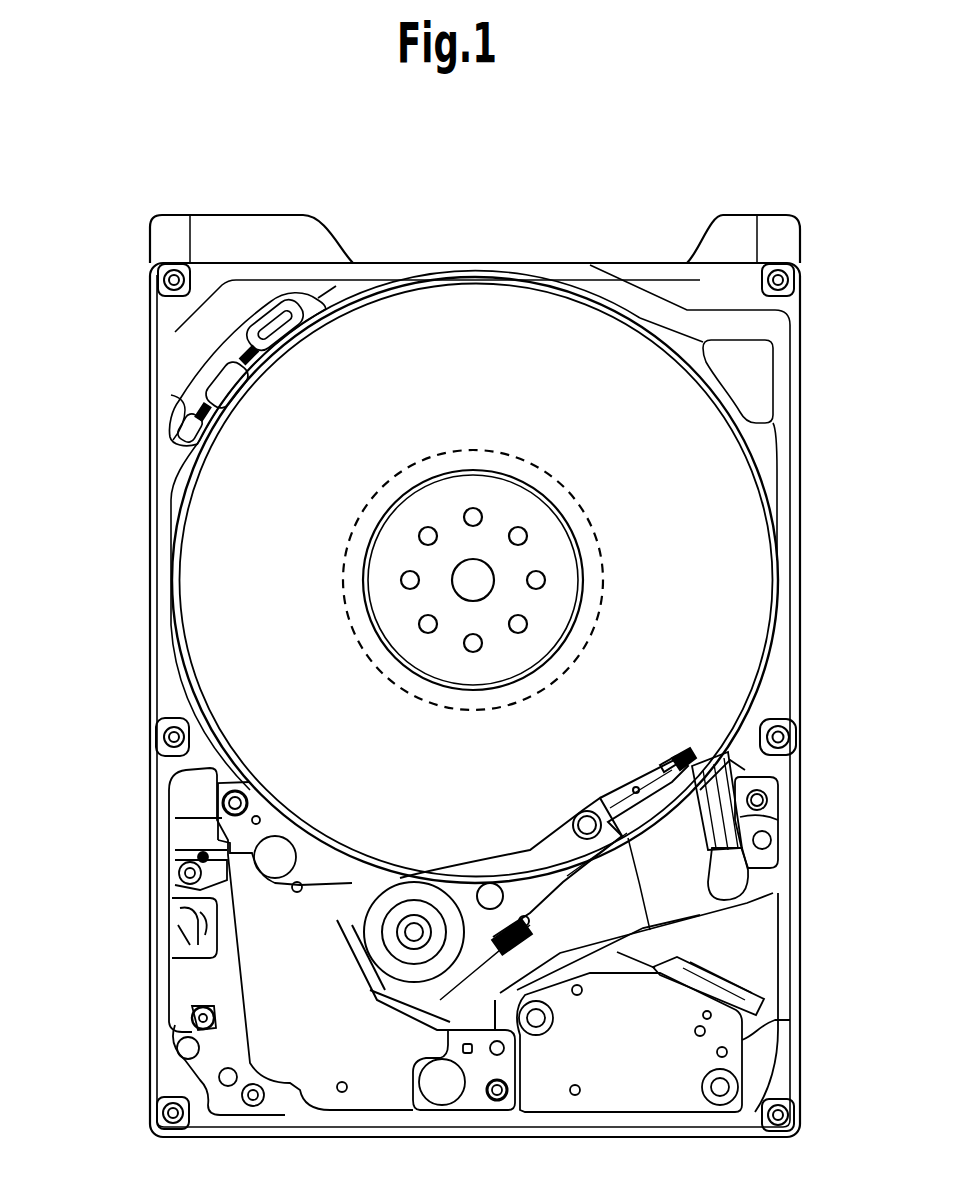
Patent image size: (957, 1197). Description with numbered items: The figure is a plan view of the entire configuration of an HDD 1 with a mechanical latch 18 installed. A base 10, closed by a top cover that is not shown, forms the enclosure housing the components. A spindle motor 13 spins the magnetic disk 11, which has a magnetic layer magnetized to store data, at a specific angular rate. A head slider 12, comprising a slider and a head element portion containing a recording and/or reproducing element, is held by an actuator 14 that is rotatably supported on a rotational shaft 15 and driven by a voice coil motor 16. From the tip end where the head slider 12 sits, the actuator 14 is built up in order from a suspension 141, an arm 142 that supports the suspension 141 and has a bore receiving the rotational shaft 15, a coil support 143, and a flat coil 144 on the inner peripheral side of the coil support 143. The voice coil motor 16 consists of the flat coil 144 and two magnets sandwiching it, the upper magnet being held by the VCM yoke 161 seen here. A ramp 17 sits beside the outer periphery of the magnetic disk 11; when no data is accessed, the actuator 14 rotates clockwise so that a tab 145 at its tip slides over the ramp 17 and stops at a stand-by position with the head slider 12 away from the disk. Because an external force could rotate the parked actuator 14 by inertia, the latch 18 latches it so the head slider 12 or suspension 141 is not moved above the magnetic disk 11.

The HDD 1 is at (108, 169).
The base 10 is at (492, 262).
The magnetic disk 11 is at (763, 660).
The head slider 12 is at (688, 768).
The spindle motor 13 is at (597, 632).
The actuator 14 is at (459, 844).
The suspension 141 is at (643, 790).
The arm 142 is at (533, 830).
The coil support 143 is at (170, 912).
The flat coil 144 is at (372, 885).
The tab 145 is at (682, 760).
The rotational shaft 15 is at (412, 928).
The voice coil motor 16 is at (200, 988).
The VCM yoke 161 is at (203, 1025).
The ramp 17 is at (742, 818).
The latch 18 is at (187, 868).